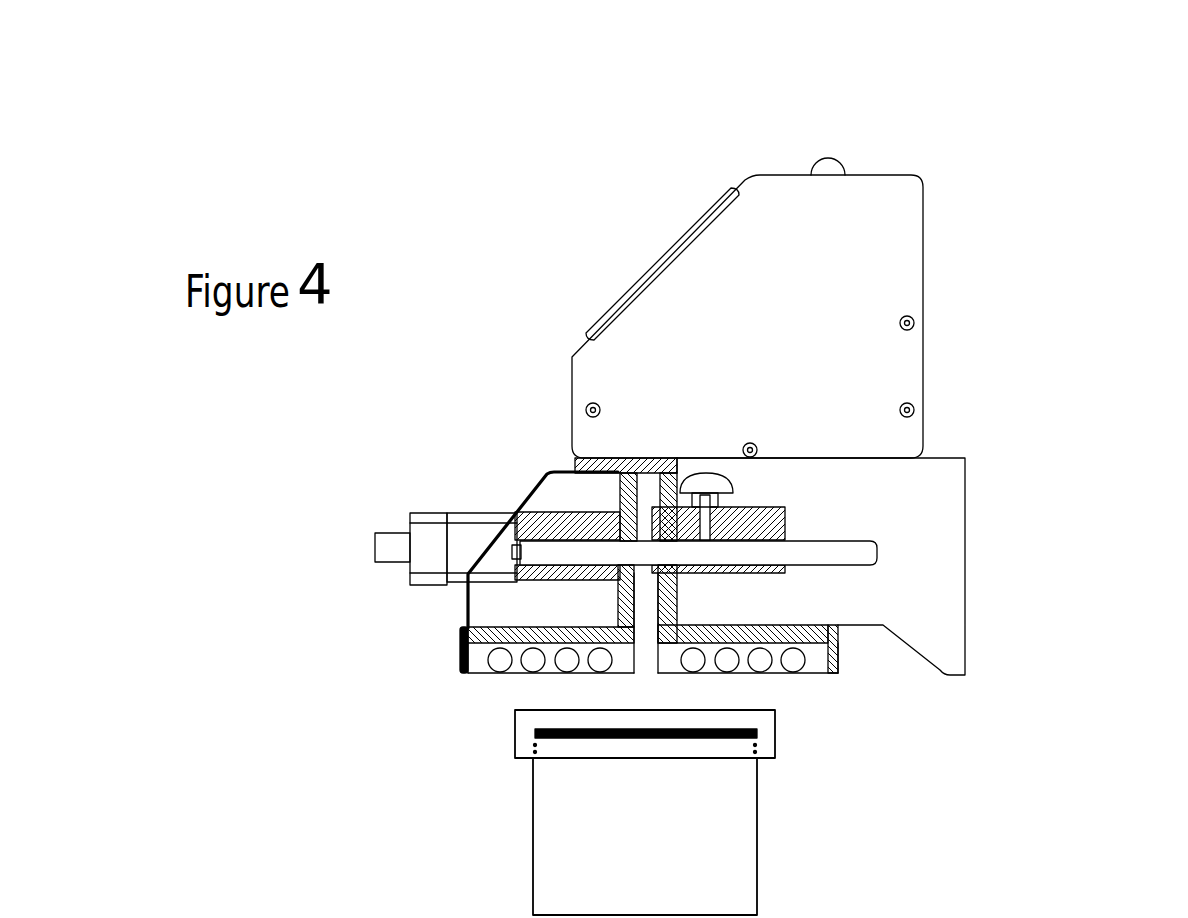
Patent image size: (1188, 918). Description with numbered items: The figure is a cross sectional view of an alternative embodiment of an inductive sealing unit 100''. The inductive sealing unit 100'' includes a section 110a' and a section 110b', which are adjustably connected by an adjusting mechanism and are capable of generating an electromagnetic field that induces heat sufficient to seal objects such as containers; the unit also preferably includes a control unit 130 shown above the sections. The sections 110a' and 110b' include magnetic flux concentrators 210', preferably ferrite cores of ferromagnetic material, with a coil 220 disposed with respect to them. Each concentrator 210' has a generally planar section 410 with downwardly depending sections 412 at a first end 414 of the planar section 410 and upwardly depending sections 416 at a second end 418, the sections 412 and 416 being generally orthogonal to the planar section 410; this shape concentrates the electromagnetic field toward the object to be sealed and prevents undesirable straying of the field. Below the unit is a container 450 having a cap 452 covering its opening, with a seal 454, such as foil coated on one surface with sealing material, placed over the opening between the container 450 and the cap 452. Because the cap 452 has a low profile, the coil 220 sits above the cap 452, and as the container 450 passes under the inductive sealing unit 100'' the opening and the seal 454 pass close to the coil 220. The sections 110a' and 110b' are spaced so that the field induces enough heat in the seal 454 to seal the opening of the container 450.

The inductive sealing unit 100'' is at (664, 476).
The control unit 130 is at (629, 213).
The magnetic flux concentrators 210' is at (650, 565).
The coil 220 is at (462, 652).
The first end 414 is at (388, 643).
The downwardly depending sections 412 is at (500, 660).
The planar sections 410 is at (580, 635).
The upwardly depending sections 416 is at (622, 605).
The second end 418 is at (652, 652).
The section 110b' is at (347, 684).
The section 110a' is at (932, 706).
The container 450 is at (494, 826).
The cap 452 is at (776, 740).
The seal 454 is at (637, 738).